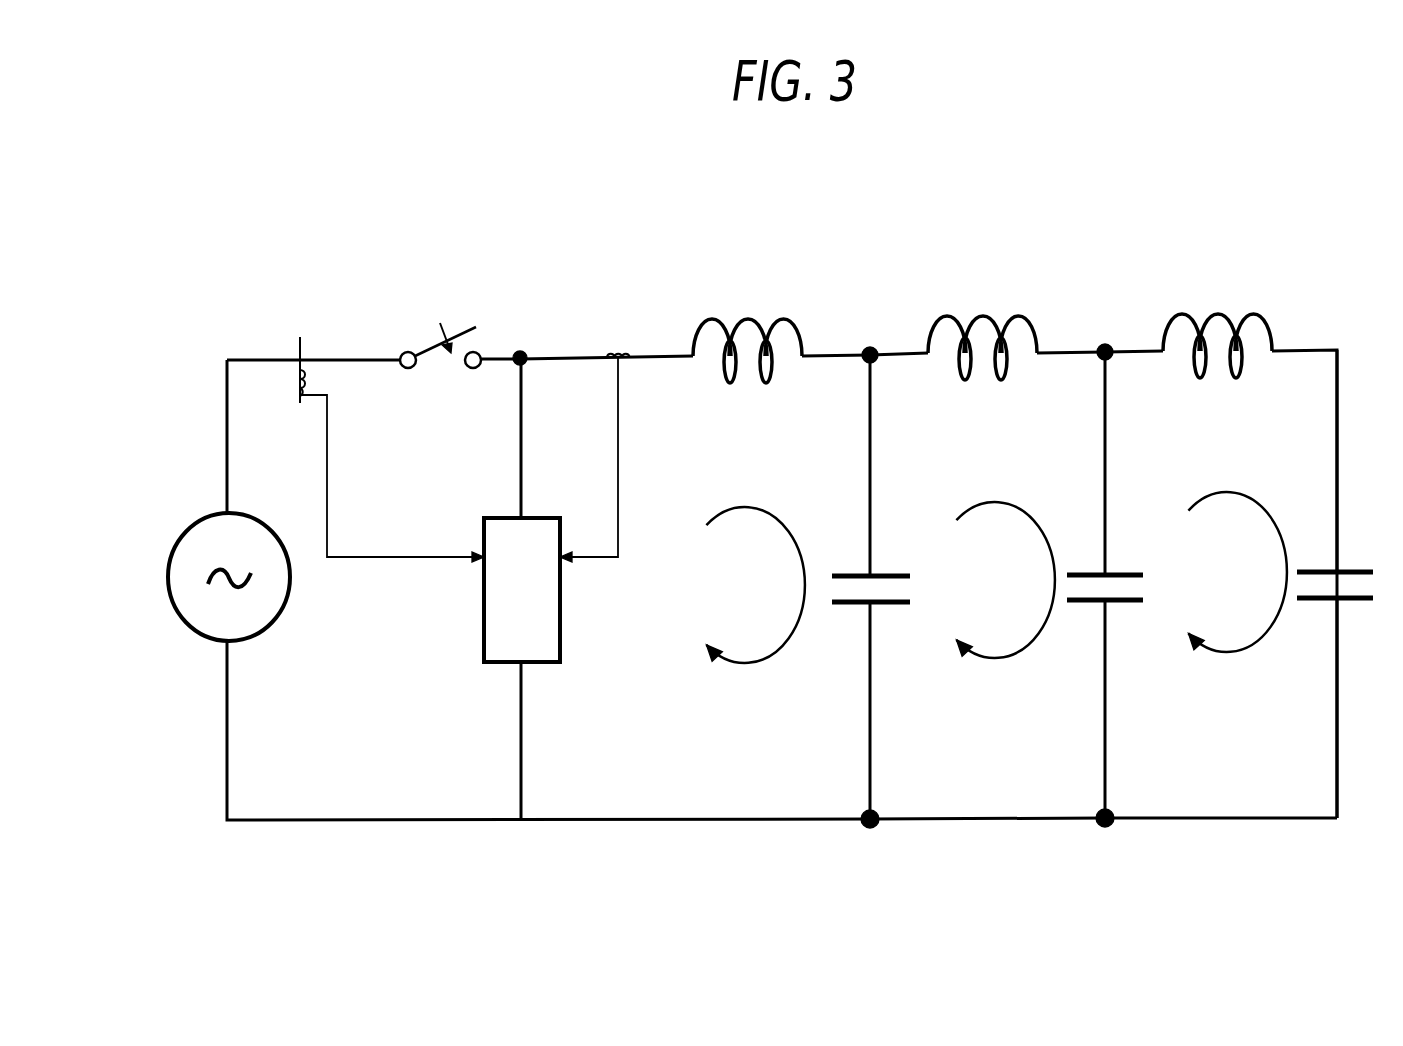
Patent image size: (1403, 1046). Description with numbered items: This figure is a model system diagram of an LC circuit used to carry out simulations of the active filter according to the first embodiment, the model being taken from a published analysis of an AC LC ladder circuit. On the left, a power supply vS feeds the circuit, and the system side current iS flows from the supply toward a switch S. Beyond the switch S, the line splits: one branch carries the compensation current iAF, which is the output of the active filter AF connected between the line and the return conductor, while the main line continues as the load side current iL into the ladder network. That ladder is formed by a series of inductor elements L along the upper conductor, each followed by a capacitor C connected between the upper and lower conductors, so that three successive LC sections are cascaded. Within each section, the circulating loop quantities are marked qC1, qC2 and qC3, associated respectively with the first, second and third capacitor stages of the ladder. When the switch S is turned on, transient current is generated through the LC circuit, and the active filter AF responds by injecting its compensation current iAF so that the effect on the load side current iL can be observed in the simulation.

The power supply vS is at (208, 577).
The system side current iS is at (390, 341).
The switch S is at (440, 325).
The active filter AF is at (522, 590).
The compensation current iAF is at (534, 397).
The load side current iL is at (635, 342).
The inductor L is at (982, 329).
The capacitor C is at (1102, 584).
The capacitor charge / loop current 1 qC1 is at (744, 585).
The capacitor charge / loop current 2 qC2 is at (1003, 580).
The capacitor charge / loop current 3 qC3 is at (1234, 572).